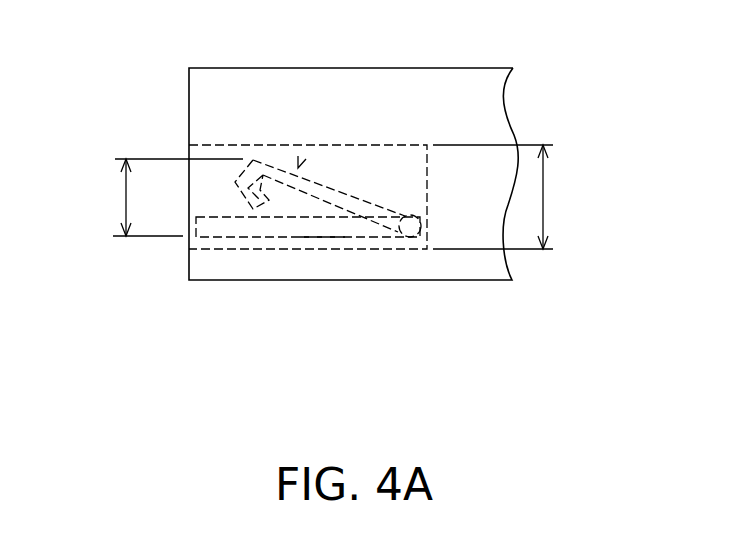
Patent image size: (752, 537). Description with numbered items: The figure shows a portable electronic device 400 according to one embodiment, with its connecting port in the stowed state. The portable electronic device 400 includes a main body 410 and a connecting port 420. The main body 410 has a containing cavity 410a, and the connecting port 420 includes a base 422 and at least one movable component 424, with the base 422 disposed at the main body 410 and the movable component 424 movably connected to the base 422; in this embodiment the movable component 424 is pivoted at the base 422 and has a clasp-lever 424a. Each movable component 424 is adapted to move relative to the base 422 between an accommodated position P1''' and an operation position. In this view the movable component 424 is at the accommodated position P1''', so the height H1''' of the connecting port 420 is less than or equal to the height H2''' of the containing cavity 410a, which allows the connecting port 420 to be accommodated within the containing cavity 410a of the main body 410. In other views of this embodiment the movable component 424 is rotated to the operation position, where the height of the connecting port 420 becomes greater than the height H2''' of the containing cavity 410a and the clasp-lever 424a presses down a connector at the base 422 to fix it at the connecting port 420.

The portable electronic device 400 is at (423, 216).
The main body 410 is at (465, 235).
The containing cavity 410a is at (233, 249).
The connecting port 420 is at (369, 192).
The base 422 is at (323, 235).
The movable component 424 is at (287, 129).
The clasp-lever 424a is at (233, 162).
The accommodated position P1''' is at (312, 91).
The height of the connecting port H1''' is at (142, 197).
The height of the containing cavity H2''' is at (527, 197).